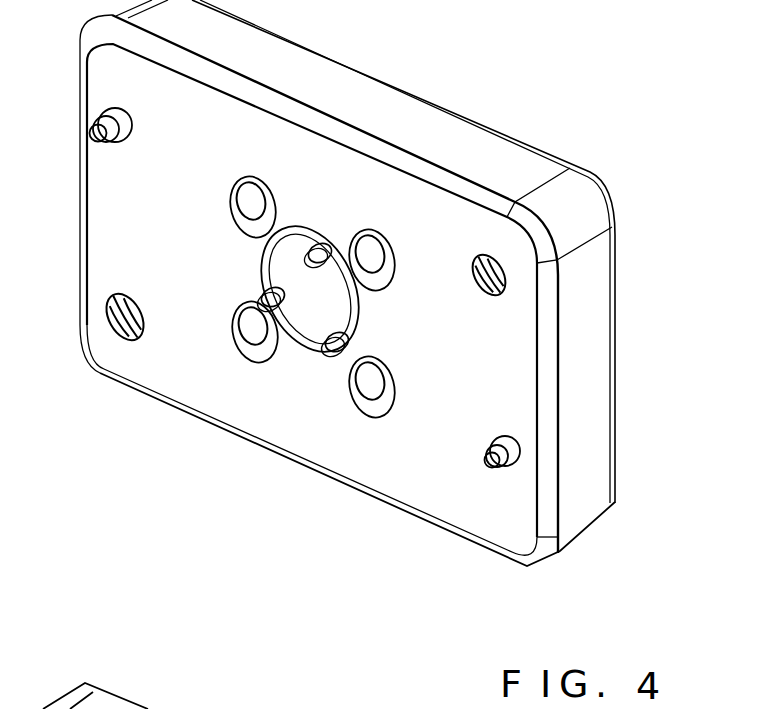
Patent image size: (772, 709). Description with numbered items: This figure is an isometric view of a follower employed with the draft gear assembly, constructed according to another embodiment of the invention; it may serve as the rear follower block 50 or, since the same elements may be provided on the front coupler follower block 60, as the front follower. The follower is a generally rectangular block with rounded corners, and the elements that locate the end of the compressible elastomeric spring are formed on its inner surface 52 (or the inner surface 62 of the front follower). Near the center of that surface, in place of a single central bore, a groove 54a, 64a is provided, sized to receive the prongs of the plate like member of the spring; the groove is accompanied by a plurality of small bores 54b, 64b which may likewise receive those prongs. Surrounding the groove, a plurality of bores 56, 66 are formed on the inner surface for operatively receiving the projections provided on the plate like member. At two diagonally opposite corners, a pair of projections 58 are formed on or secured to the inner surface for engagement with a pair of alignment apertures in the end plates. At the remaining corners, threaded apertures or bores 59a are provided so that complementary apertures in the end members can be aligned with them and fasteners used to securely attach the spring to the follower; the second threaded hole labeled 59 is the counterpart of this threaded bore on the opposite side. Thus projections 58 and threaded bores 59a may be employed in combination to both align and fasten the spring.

The rear follower block 50 is at (425, 283).
The front coupler follower block 60 is at (597, 364).
The inner surface 52 is at (322, 310).
The inner surface 62 is at (413, 483).
The groove 54a is at (288, 323).
The groove 64a is at (317, 340).
The small bores 54b is at (272, 300).
The small bores 64b is at (261, 287).
The bores 56 is at (327, 297).
The bores 66 is at (372, 232).
The projections 58 is at (100, 148).
The threaded hole 59 is at (124, 292).
The threaded apertures or bores 59a is at (493, 297).